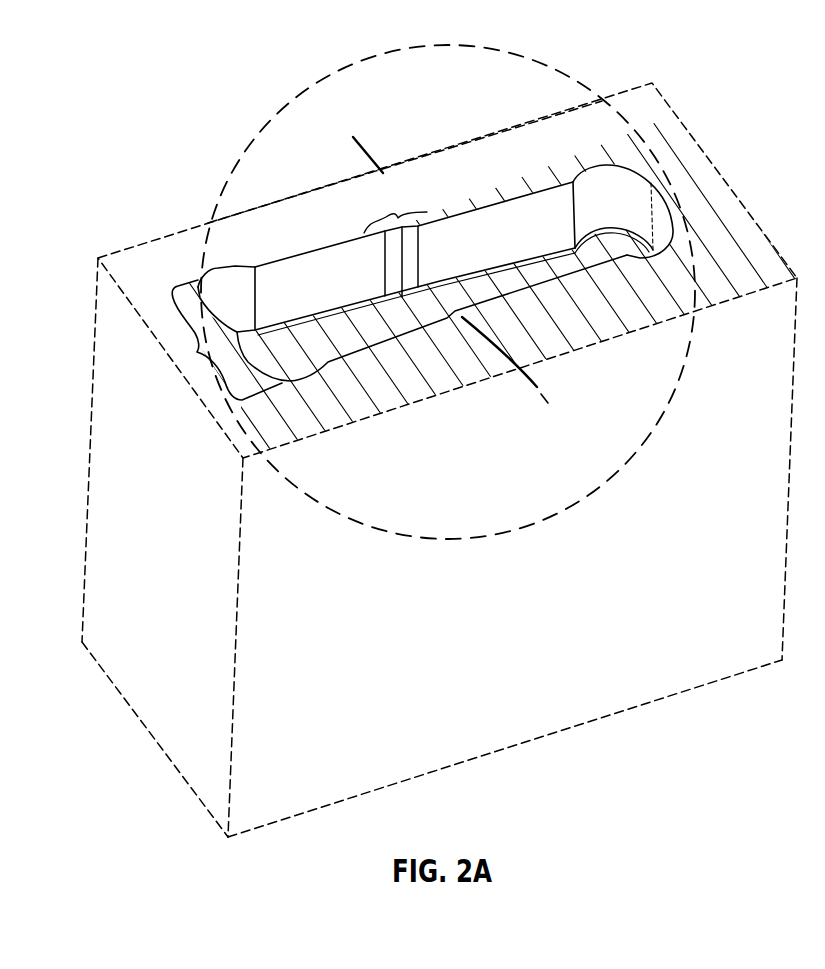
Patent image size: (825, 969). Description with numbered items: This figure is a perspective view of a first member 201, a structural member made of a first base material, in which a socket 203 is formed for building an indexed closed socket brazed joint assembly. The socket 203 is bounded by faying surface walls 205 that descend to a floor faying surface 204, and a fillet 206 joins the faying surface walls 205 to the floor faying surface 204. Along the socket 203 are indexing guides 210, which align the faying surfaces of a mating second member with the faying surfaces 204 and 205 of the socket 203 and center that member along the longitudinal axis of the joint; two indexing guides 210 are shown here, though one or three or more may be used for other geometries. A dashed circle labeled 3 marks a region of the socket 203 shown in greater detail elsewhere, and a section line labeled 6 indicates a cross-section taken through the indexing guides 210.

The first member 201 is at (137, 260).
The socket 203 is at (197, 352).
The floor faying surface 204 is at (610, 247).
The faying surface walls 205 is at (293, 285).
The fillet 206 is at (502, 267).
The indexing guides 210 is at (607, 392).
The detail region of FIG. 3 is at (553, 72).
The section line 6 is at (353, 137).